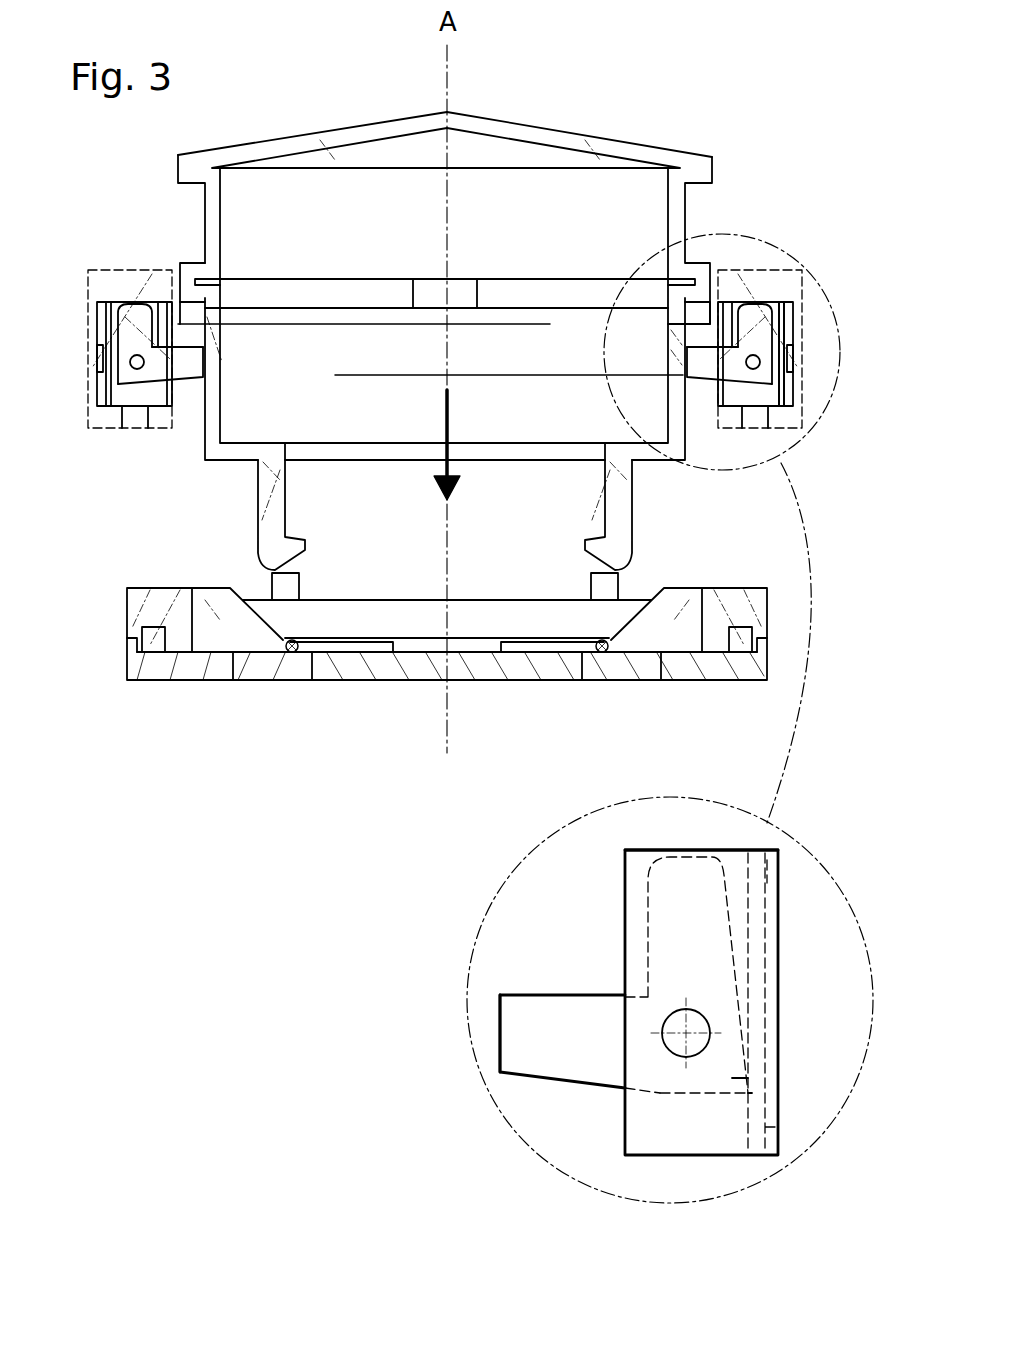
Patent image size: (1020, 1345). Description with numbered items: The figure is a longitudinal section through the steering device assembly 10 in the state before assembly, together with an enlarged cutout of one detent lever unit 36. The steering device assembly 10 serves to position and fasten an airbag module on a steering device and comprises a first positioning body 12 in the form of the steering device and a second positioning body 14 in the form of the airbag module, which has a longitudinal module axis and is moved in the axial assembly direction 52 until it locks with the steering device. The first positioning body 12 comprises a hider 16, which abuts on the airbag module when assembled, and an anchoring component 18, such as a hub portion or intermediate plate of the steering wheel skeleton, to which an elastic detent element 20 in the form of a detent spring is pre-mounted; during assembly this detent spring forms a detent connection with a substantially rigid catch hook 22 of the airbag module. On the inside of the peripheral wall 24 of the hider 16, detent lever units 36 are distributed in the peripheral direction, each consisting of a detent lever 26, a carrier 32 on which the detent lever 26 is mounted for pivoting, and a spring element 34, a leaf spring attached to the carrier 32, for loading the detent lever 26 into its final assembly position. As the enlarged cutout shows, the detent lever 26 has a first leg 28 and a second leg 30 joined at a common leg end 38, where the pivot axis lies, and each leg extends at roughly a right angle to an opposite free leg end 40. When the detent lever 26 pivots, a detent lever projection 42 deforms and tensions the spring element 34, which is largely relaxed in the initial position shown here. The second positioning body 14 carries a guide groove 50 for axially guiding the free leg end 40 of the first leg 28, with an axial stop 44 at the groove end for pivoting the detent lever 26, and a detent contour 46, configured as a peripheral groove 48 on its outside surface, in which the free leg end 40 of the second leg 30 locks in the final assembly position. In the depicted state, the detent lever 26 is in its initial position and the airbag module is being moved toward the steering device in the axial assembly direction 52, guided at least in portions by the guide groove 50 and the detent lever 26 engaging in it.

The steering device assembly 10 is at (320, 815).
The first positioning body 12 is at (145, 720).
The second positioning body 14 is at (573, 87).
The hider 16 is at (778, 280).
The anchoring component 18 is at (490, 668).
The elastic detent element 20 is at (292, 655).
The catch hook 22 is at (265, 528).
The peripheral wall 24 is at (780, 380).
The detent lever 26 is at (142, 345).
The first leg 28 is at (570, 1050).
The second leg 30 is at (697, 947).
The carrier 32 is at (660, 1138).
The spring element 34 is at (775, 327).
The detent lever unit 36 is at (108, 255).
The common leg end 38 is at (760, 1057).
The free leg end 40 is at (687, 843).
The detent lever projection 42 is at (730, 1075).
The axial stop 44 is at (190, 300).
The detent contour 46 is at (696, 211).
The peripheral groove 48 is at (205, 215).
The guide groove 50 is at (193, 327).
The axial assembly direction 52 is at (452, 430).